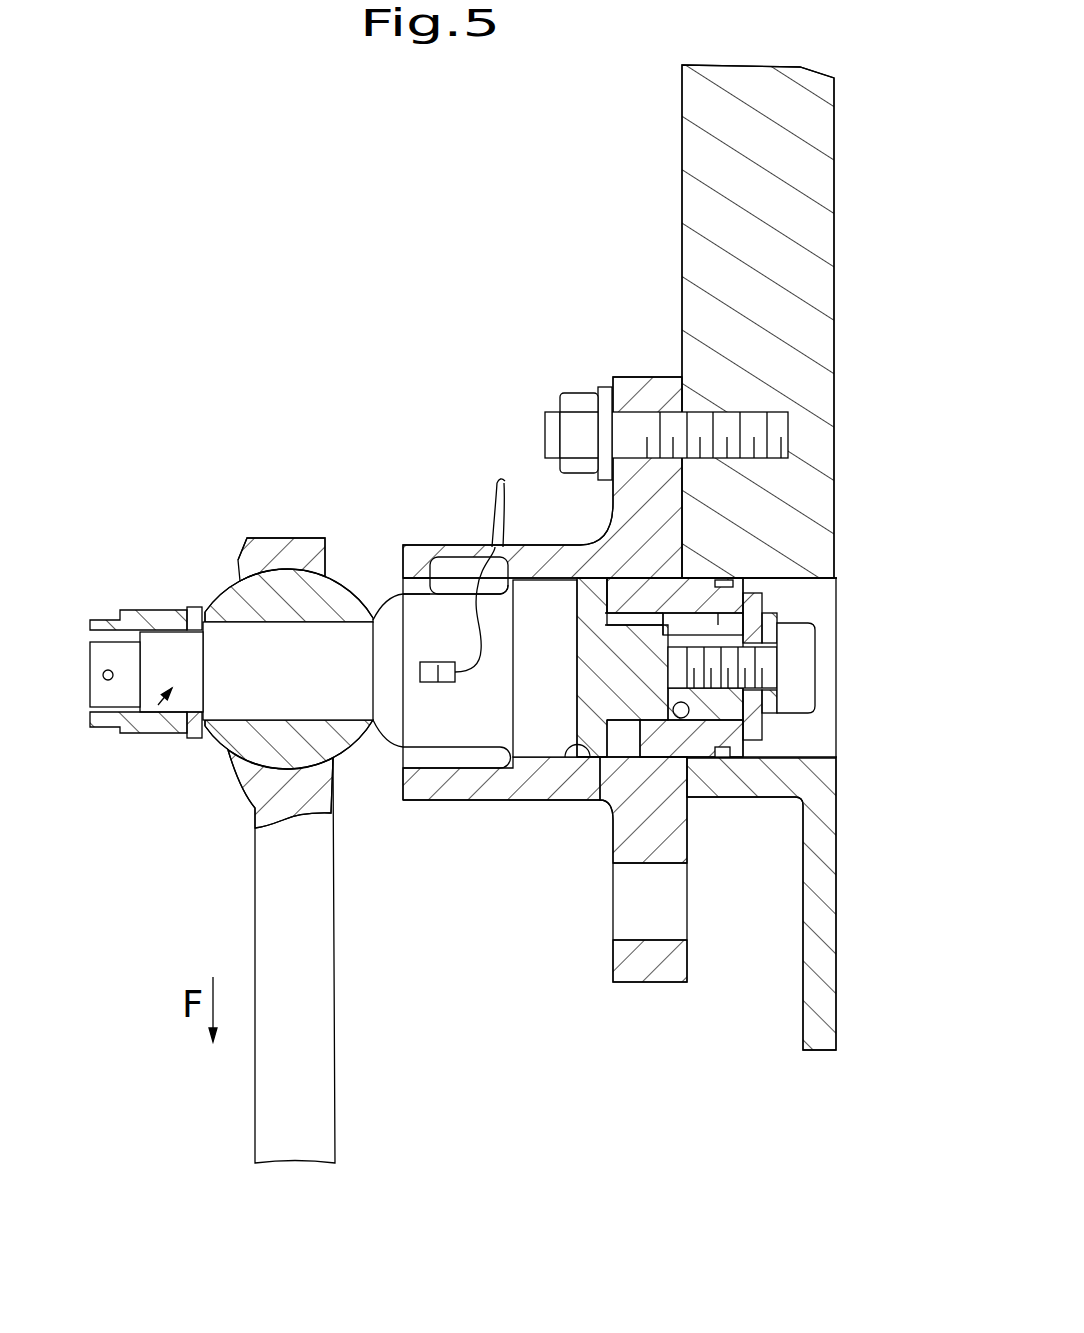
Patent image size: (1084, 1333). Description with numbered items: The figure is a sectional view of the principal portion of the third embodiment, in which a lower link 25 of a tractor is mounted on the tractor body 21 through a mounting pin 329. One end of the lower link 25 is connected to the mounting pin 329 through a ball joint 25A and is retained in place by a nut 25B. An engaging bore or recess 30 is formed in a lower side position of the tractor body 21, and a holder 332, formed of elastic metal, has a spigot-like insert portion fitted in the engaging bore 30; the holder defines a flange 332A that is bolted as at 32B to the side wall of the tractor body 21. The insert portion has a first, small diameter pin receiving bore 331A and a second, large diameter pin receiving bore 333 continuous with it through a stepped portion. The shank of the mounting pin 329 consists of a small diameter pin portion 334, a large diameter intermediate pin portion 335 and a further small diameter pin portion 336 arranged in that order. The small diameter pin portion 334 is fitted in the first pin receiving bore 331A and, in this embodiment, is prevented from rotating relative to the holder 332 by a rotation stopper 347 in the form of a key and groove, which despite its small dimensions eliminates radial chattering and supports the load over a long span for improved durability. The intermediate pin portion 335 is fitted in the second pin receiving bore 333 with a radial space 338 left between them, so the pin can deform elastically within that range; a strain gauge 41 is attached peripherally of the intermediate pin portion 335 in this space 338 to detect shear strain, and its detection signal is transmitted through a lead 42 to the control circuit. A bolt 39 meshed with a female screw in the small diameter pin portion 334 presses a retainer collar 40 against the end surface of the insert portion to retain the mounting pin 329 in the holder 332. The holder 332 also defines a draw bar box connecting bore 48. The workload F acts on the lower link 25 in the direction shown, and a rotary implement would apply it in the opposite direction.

The tractor body 21 is at (696, 214).
The holder 332 is at (397, 540).
The flange 332A is at (627, 378).
The bolt 32B is at (563, 395).
The intermediate pin portion 335 is at (428, 608).
The radial space 338 is at (462, 757).
The second pin receiving bore 333 is at (568, 733).
The first pin receiving bore 331A is at (683, 753).
The small diameter pin portion 334 is at (722, 703).
The rotation stopper 347 is at (757, 572).
The bolt 39 is at (803, 635).
The retainer collar 40 is at (763, 730).
The engaging bore 30 is at (823, 745).
The draw bar box connecting bore 48 is at (625, 922).
The lower link 25 is at (313, 1060).
The ball joint 25A is at (247, 596).
The nut 25B is at (140, 610).
The mounting pin 329 is at (150, 727).
The small diameter pin portion 336 is at (232, 697).
The strain gauge 41 is at (437, 675).
The lead 42 is at (477, 670).